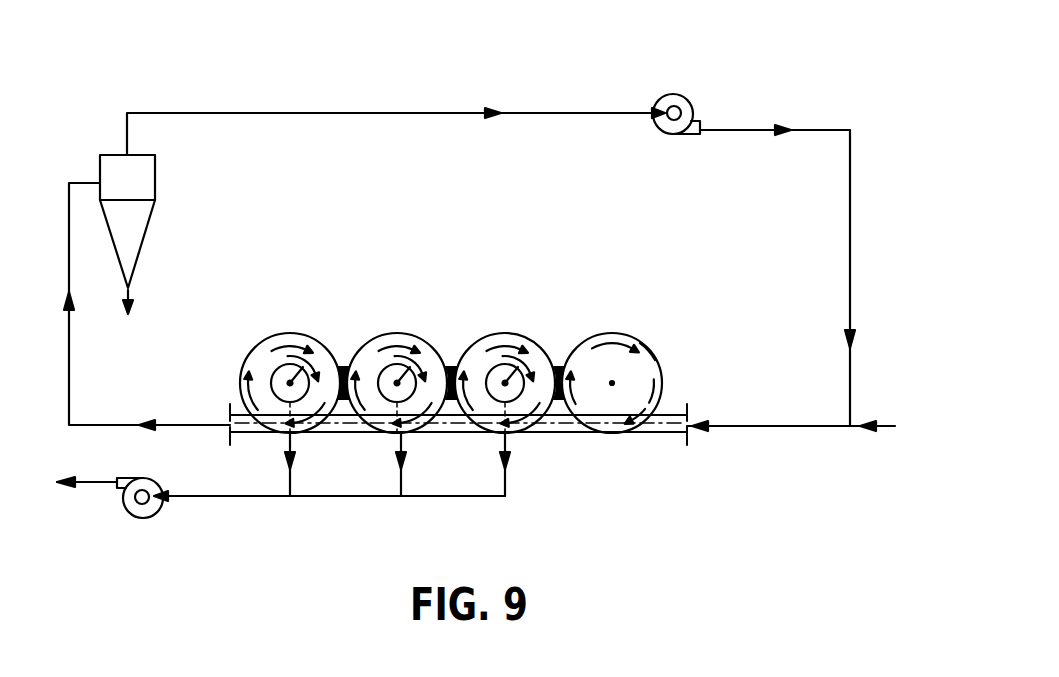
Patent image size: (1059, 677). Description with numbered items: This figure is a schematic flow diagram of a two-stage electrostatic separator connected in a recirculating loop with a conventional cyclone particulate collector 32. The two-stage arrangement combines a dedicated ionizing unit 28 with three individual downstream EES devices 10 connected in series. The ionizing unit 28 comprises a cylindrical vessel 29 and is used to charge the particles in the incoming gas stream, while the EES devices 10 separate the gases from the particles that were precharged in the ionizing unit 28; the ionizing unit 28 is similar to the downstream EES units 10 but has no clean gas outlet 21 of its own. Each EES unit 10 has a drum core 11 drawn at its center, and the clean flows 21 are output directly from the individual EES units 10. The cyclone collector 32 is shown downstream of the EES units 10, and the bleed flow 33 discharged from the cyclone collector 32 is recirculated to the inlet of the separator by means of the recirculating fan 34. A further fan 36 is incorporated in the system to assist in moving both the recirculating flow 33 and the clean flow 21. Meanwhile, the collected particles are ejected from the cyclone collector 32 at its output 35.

The EES device 10 is at (279, 312).
The drum core / shaft 11 is at (317, 313).
The clean gas outlet 21 is at (290, 473).
The dedicated ionizing unit 28 is at (619, 312).
The cylindrical vessel 29 is at (650, 352).
The cyclone particulate collector 32 is at (115, 227).
The bleed flow 33 is at (408, 113).
The recirculating fan 34 is at (695, 103).
The output 35 is at (127, 292).
The fan 36 is at (123, 510).